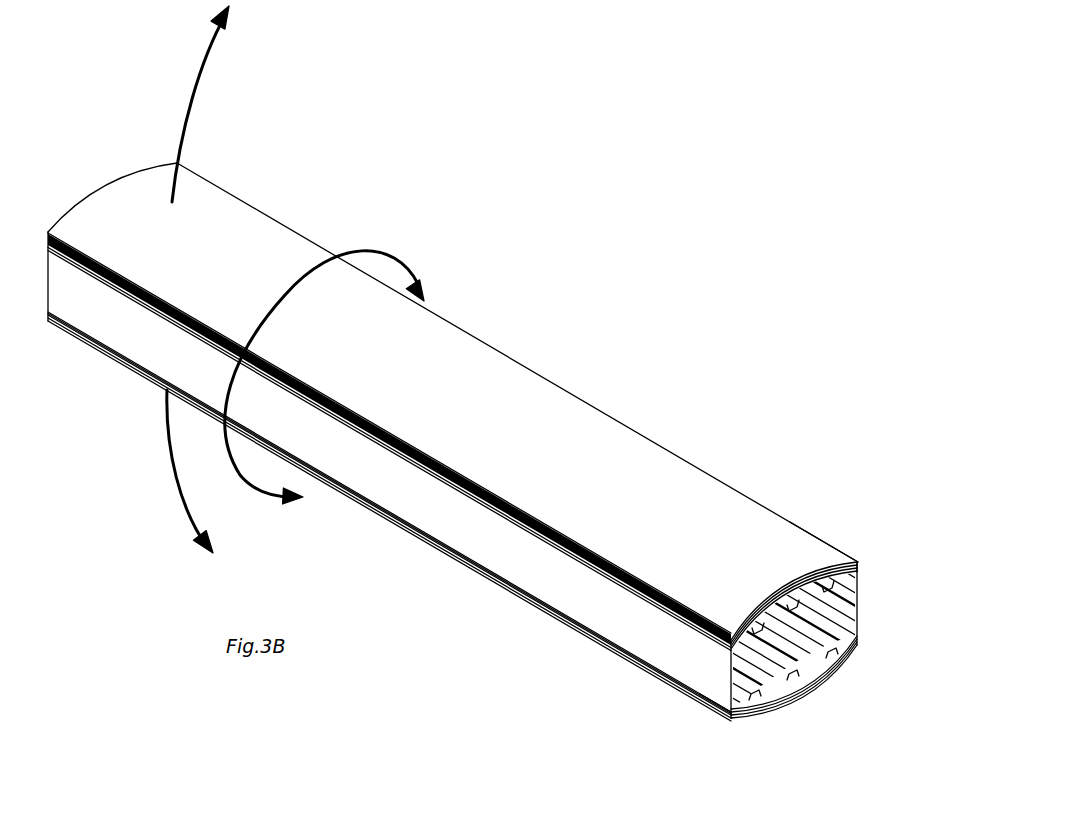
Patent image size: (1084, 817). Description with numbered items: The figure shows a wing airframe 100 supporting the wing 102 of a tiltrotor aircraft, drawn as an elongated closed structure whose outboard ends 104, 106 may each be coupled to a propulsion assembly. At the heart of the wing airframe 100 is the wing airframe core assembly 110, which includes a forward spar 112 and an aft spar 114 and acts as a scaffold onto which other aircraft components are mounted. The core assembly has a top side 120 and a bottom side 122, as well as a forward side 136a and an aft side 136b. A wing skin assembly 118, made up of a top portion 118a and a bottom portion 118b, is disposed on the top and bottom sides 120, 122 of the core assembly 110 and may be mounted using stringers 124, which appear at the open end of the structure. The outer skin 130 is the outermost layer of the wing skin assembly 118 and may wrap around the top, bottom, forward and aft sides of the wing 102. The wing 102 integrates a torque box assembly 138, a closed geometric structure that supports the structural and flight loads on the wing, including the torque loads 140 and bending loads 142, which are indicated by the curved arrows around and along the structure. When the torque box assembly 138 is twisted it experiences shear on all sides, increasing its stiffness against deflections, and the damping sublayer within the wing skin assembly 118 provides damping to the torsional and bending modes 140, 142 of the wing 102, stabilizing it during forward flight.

The wing airframe 100 is at (504, 456).
The wing 102 is at (504, 456).
The outboard end 104 is at (82, 206).
The outboard end 106 is at (862, 583).
The wing airframe core assembly 110 is at (845, 650).
The forward spar 112 is at (484, 552).
The aft spar 114 is at (862, 622).
The wing skin assembly 118 is at (389, 516).
The top portion of wing skin assembly 118a is at (679, 488).
The bottom portion of wing skin assembly 118b is at (529, 612).
The top side 120 is at (860, 568).
The bottom side 122 is at (862, 640).
The stringers 124 is at (792, 668).
The outer skin 130 is at (793, 537).
The forward side 136a is at (377, 498).
The aft side 136b is at (862, 598).
The torque box assembly 138 is at (611, 617).
The torque loads 140 is at (385, 243).
The bending loads 142 is at (198, 83).